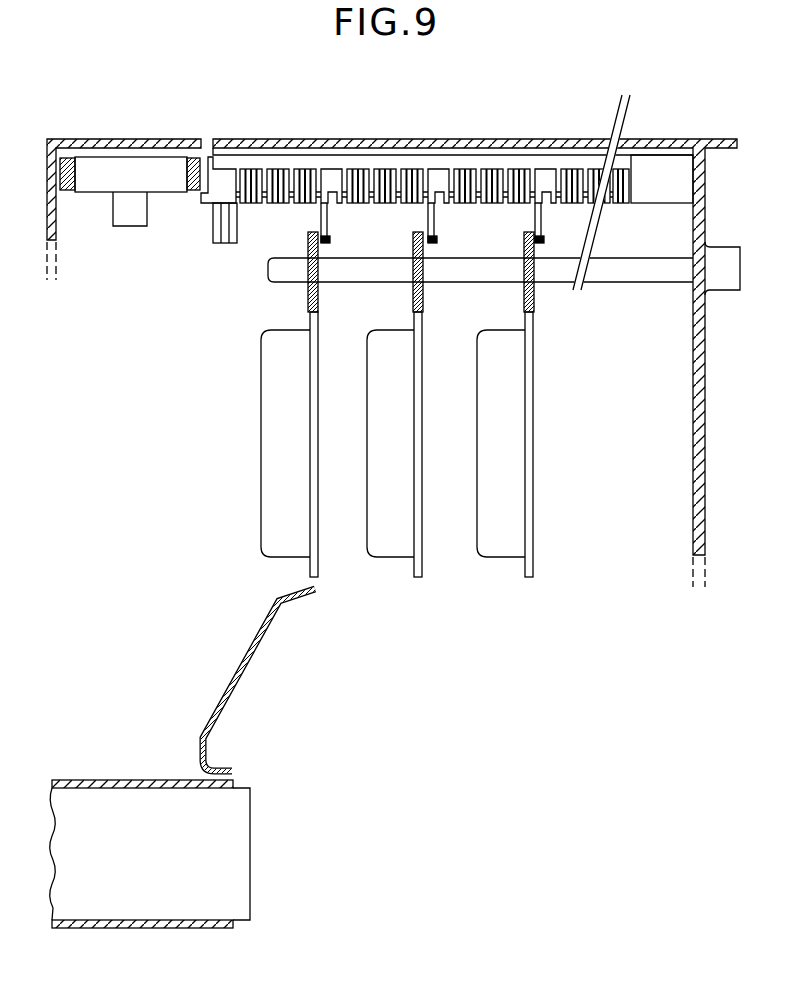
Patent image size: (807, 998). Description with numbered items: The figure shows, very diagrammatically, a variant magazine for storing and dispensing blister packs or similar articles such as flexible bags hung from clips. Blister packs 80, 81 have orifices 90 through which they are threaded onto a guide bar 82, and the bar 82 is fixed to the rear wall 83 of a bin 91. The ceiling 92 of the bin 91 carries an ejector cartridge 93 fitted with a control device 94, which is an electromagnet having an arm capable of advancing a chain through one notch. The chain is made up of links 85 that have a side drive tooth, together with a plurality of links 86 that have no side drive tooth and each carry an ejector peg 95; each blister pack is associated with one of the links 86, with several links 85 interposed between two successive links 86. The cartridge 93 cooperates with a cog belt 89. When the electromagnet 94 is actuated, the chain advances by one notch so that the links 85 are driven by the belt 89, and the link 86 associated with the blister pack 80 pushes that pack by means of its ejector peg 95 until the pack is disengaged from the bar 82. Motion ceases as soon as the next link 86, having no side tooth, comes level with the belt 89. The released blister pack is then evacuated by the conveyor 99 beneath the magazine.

The blister pack 80 is at (323, 531).
The blister pack 81 is at (426, 531).
The guide bar 82 is at (606, 272).
The rear wall 83 is at (727, 282).
The links 85 is at (383, 170).
The links 86 is at (206, 197).
The cog belt 89 is at (197, 157).
The orifices 90 is at (308, 283).
The bin 91 is at (723, 137).
The ceiling 92 is at (258, 139).
The ejector cartridge 93 is at (486, 163).
The control device 94 is at (660, 170).
The ejector peg 95 is at (230, 243).
The conveyor 99 is at (107, 782).